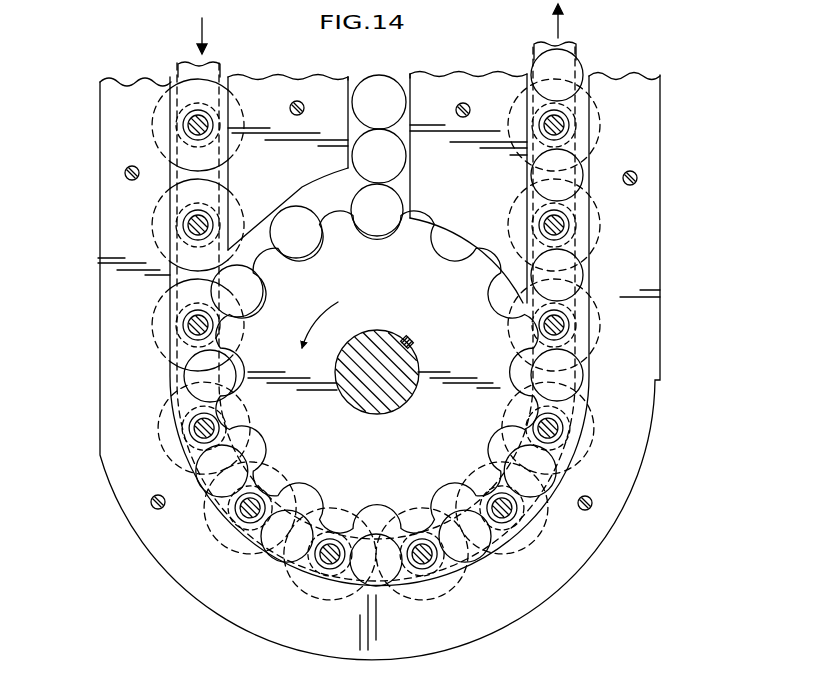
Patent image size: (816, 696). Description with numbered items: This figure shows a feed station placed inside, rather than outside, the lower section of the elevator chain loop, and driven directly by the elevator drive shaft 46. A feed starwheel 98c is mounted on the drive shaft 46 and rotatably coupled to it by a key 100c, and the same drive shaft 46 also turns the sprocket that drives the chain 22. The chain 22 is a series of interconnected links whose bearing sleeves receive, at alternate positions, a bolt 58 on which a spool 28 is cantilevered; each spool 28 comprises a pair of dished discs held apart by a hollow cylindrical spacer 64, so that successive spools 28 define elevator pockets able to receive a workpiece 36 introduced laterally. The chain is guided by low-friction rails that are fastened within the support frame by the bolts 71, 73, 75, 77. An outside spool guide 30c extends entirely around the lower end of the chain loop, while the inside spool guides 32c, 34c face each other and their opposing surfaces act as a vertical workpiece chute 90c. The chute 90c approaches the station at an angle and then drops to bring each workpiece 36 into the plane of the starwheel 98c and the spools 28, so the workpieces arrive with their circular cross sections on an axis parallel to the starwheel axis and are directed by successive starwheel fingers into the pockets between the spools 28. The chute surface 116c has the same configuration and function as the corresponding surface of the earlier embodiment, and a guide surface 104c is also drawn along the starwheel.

The chain 22 is at (578, 356).
The spool 28 is at (188, 278).
The outside spool guide 30c is at (643, 453).
The inside spool guide 32c is at (282, 82).
The inside spool guide 34c is at (474, 80).
The workpiece 36 is at (372, 84).
The drive shaft 46 is at (364, 402).
The bolt 58 is at (186, 338).
The spacer 64 is at (188, 325).
The bolt 71 is at (638, 178).
The bolt 73 is at (470, 107).
The bolt 75 is at (291, 108).
The bolt 77 is at (125, 173).
The workpiece chute 90c is at (396, 80).
The feed starwheel 98c is at (452, 455).
The key 100c is at (412, 338).
The cam surface 104c is at (424, 222).
The chute surface 116c is at (320, 180).